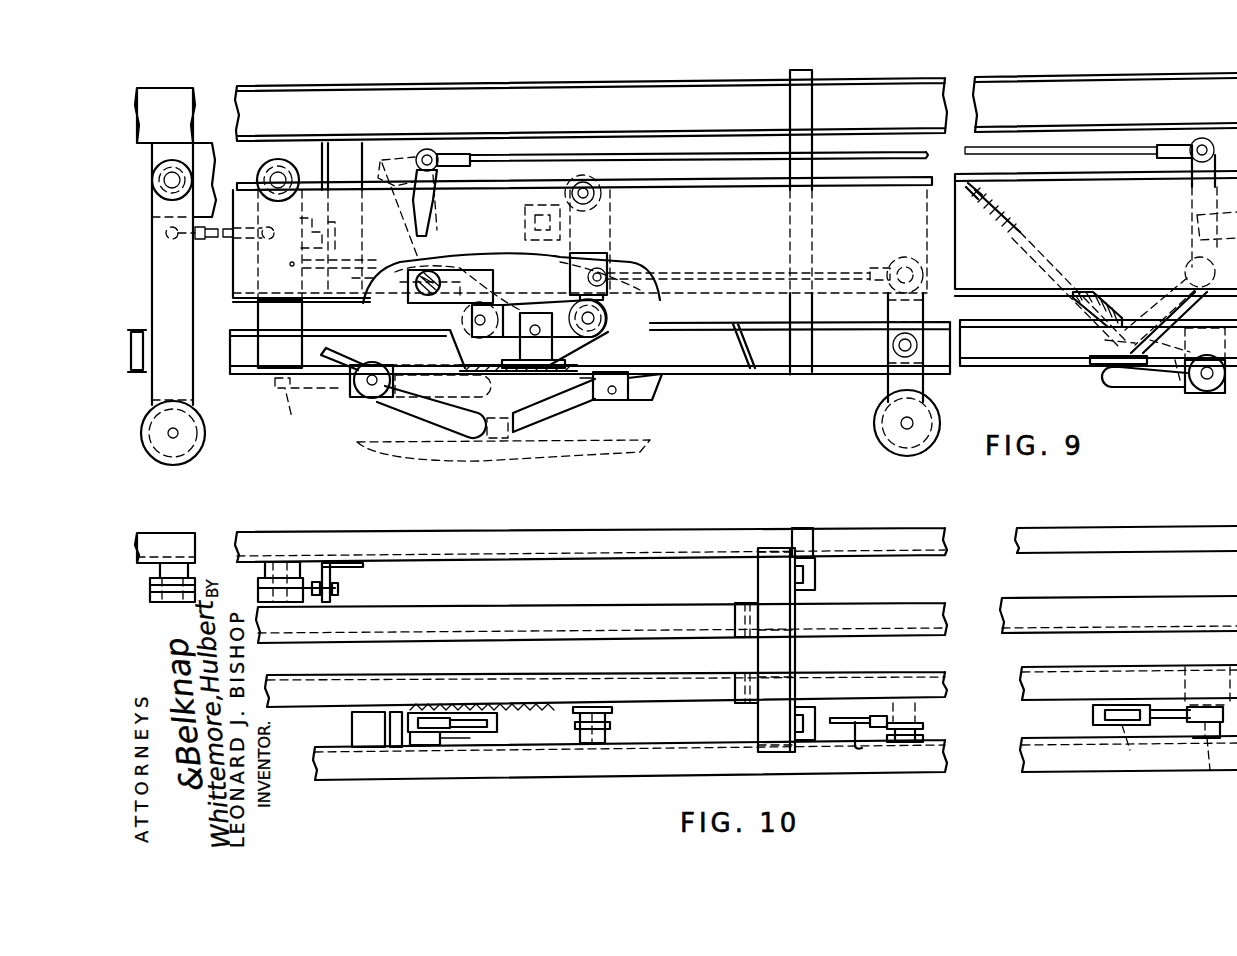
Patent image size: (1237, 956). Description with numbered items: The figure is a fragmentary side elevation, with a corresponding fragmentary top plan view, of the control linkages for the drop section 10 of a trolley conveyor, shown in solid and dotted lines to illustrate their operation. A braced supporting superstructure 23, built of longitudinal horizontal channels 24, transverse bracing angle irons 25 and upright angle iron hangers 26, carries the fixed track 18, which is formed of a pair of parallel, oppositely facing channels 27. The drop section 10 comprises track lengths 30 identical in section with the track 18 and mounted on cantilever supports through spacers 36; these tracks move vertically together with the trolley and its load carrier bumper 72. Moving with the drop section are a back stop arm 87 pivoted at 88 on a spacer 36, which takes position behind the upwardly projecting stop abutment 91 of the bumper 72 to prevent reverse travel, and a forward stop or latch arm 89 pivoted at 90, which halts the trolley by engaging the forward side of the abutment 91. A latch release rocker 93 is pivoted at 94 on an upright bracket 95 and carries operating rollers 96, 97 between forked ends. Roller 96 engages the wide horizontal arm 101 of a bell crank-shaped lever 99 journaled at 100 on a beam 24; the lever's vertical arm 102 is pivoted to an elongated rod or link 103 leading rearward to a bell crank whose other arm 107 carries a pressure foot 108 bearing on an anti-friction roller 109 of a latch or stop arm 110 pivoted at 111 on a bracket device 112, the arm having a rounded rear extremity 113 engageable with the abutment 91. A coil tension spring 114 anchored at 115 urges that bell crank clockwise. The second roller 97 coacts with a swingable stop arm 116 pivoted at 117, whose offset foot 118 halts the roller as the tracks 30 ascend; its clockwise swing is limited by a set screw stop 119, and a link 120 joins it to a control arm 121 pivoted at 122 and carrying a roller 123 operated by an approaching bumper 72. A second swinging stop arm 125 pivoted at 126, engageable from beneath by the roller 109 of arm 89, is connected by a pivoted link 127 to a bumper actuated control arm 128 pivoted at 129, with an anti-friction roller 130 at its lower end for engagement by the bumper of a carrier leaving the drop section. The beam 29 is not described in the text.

In FIG. 9, the drop section 10 is at (870, 384).
In FIG. 10, the drop section 10 is at (868, 528).
In FIG. 9, the track 18 is at (144, 352).
In FIG. 9, the supporting superstructure 23 is at (1093, 180).
In FIG. 10, the supporting superstructure 23 is at (718, 528).
In FIG. 9, the horizontal channels 24 is at (240, 178).
In FIG. 10, the horizontal channels 24 is at (630, 534).
In FIG. 10, the transverse bracing angle irons 25 is at (770, 575).
In FIG. 9, the upright angle iron hangers 26 is at (355, 152).
In FIG. 10, the upright angle iron hangers 26 is at (808, 580).
In FIG. 9, the channels 27 is at (1043, 356).
In FIG. 10, the channels 27 is at (1086, 690).
In FIG. 9, the top beam 29 is at (683, 93).
In FIG. 9, the track lengths 30 is at (705, 338).
In FIG. 10, the track lengths 30 is at (622, 610).
In FIG. 9, the spacers 36 is at (571, 381).
In FIG. 9, the load carrier bumper 72 is at (560, 458).
In FIG. 9, the back stop arm 87 is at (596, 410).
In FIG. 9, the pivot 88 is at (640, 392).
In FIG. 9, the forward stop or latch arm 89 is at (420, 410).
In FIG. 9, the pivot 90 is at (370, 392).
In FIG. 9, the stop abutment 91 is at (503, 434).
In FIG. 9, the latch release rocker 93 is at (582, 336).
In FIG. 9, the pivot 94 is at (535, 323).
In FIG. 9, the upright bracket 95 is at (520, 346).
In FIG. 9, the operating roller 96 is at (474, 320).
In FIG. 9, the operating roller 97 is at (608, 320).
In FIG. 9, the bell crank-shaped lever 99 is at (476, 268).
In FIG. 10, the bell crank-shaped lever 99 is at (475, 745).
In FIG. 9, the journal 100 is at (418, 288).
In FIG. 10, the journal 100 is at (428, 718).
In FIG. 9, the horizontal arm 101 is at (450, 270).
In FIG. 9, the vertical arm 102 is at (438, 205).
In FIG. 10, the vertical arm 102 is at (396, 747).
In FIG. 9, the rod or link 103 is at (718, 155).
In FIG. 10, the rod or link 103 is at (500, 722).
In FIG. 9, the bell crank arm 107 is at (1155, 254).
In FIG. 10, the bell crank arm 107 is at (1166, 708).
In FIG. 9, the pressure foot 108 is at (1100, 368).
In FIG. 10, the pressure foot 108 is at (1093, 716).
In FIG. 9, the anti-friction roller 109 is at (1130, 400).
In FIG. 10, the anti-friction roller 109 is at (1144, 746).
In FIG. 9, the latch or stop arm 110 is at (1176, 383).
In FIG. 10, the latch or stop arm 110 is at (1210, 771).
In FIG. 9, the pivot 111 is at (1215, 390).
In FIG. 10, the pivot 111 is at (1212, 722).
In FIG. 9, the bracket device 112 is at (352, 394).
In FIG. 9, the rounded rear extremity 113 is at (495, 412).
In FIG. 9, the coil tension spring 114 is at (1030, 234).
In FIG. 9, the fixed anchor 115 is at (993, 219).
In FIG. 9, the swingable stop arm 116 is at (603, 252).
In FIG. 10, the swingable stop arm 116 is at (611, 729).
In FIG. 9, the pivot 117 is at (600, 205).
In FIG. 10, the pivot 117 is at (612, 720).
In FIG. 9, the offset foot 118 is at (612, 272).
In FIG. 9, the set screw stop 119 is at (556, 216).
In FIG. 10, the set screw stop 119 is at (338, 590).
In FIG. 9, the link 120 is at (745, 272).
In FIG. 10, the link 120 is at (873, 746).
In FIG. 9, the control arm 121 is at (905, 395).
In FIG. 10, the control arm 121 is at (925, 731).
In FIG. 9, the pivot 122 is at (893, 345).
In FIG. 10, the pivot 122 is at (916, 705).
In FIG. 9, the anti-friction roller 123 is at (912, 452).
In FIG. 9, the second swinging stop arm 125 is at (262, 308).
In FIG. 10, the second swinging stop arm 125 is at (262, 590).
In FIG. 9, the pivot 126 is at (282, 176).
In FIG. 10, the pivot 126 is at (292, 570).
In FIG. 9, the pivoted link 127 is at (208, 240).
In FIG. 9, the bumper actuated control arm 128 is at (185, 398).
In FIG. 10, the bumper actuated control arm 128 is at (160, 575).
In FIG. 9, the pivot 129 is at (180, 178).
In FIG. 10, the pivot 129 is at (196, 548).
In FIG. 9, the anti-friction roller 130 is at (195, 447).